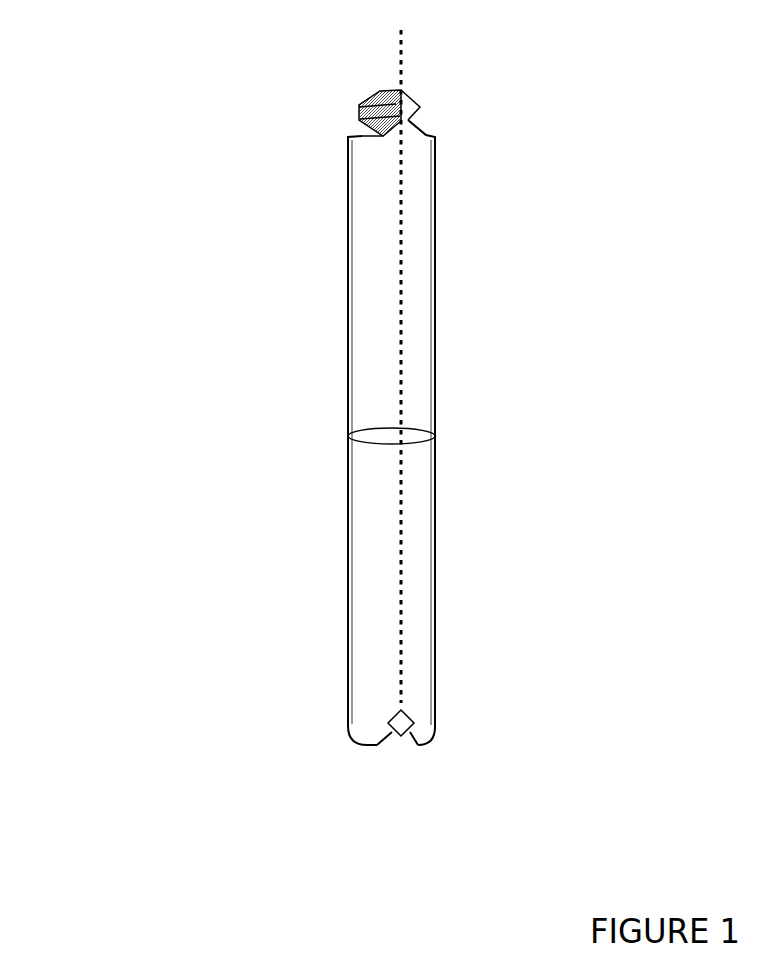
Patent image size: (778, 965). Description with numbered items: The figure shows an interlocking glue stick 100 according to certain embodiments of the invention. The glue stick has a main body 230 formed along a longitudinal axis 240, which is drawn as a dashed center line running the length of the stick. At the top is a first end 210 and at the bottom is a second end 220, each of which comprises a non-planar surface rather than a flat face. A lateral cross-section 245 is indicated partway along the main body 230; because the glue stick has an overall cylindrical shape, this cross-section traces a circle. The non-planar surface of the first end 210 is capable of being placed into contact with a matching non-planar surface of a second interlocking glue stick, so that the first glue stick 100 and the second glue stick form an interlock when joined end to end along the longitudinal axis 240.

The interlocking glue stick 100 is at (56, 263).
The first end 210 is at (418, 107).
The second end 220 is at (403, 737).
The main body 230 is at (437, 345).
The longitudinal axis 240 is at (395, 58).
The lateral cross-section 245 is at (348, 435).